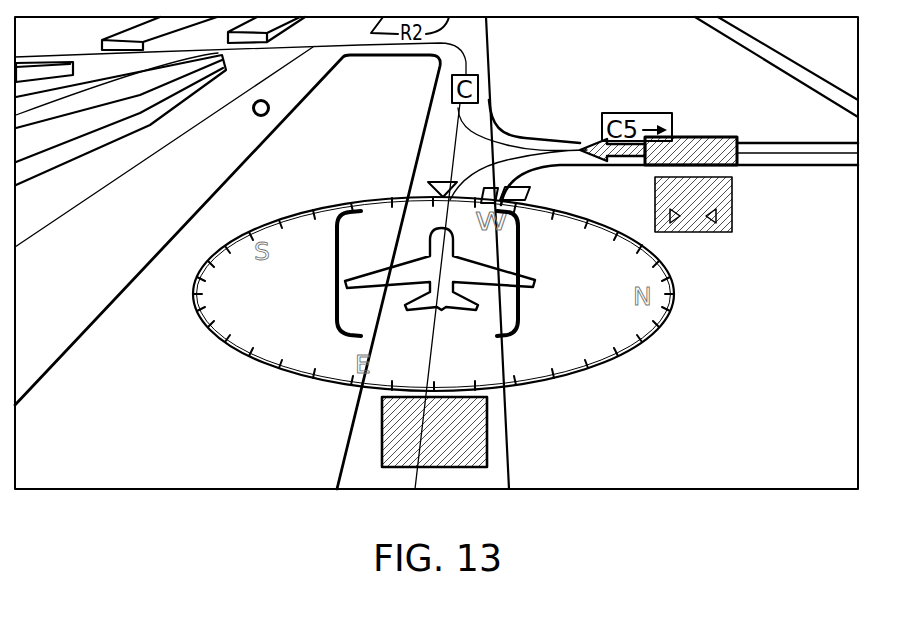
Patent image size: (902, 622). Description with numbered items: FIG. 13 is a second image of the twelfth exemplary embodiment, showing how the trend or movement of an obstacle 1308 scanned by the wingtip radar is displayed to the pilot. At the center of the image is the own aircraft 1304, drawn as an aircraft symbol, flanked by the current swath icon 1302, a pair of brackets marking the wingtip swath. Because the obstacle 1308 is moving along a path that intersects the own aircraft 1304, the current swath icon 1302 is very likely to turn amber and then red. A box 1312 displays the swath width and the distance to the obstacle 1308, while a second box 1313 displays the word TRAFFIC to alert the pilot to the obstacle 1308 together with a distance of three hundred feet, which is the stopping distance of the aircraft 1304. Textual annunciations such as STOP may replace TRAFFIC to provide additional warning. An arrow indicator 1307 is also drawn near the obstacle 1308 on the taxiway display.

The current swath icon 1302 is at (336, 277).
The own aircraft 1304 is at (430, 237).
The taxiway direction arrow indicator 1307 is at (590, 146).
The obstacle 1308 is at (705, 136).
The box 1312 is at (708, 193).
The box 1313 is at (488, 431).